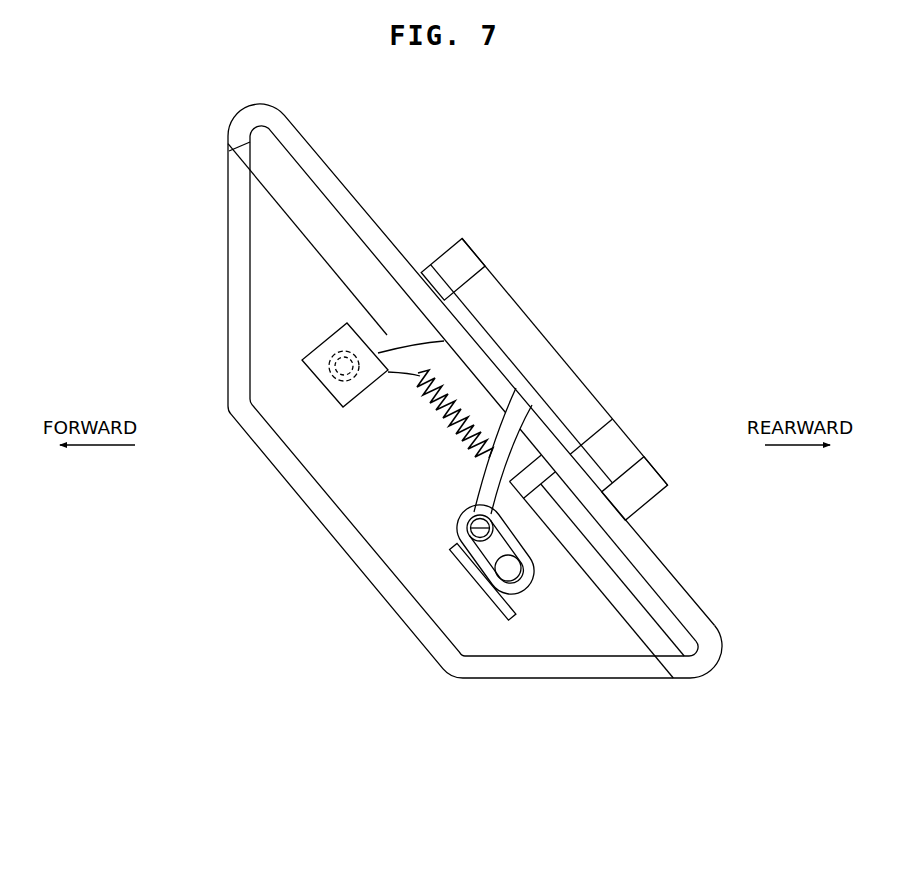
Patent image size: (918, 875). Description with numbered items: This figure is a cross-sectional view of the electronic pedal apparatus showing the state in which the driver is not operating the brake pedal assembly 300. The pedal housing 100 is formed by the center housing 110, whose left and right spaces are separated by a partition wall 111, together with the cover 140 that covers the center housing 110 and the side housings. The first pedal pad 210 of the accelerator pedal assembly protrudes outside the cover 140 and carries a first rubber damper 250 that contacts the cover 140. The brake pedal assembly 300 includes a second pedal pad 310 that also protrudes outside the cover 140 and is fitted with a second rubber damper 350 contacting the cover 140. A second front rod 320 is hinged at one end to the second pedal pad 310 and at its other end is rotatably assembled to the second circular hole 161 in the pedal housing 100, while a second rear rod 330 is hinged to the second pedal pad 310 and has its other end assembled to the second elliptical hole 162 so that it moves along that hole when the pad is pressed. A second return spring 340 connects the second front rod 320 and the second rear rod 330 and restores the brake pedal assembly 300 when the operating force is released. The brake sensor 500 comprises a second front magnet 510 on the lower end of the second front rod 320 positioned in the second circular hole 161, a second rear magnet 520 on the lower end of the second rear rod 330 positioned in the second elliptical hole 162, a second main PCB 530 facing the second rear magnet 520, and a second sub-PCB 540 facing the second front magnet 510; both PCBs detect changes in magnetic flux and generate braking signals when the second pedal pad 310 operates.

The pedal housing 100 is at (460, 391).
The center housing 110 is at (242, 381).
The partition wall 111 is at (290, 248).
The cover 140 is at (330, 180).
The second circular hole 161 is at (331, 358).
The second elliptical hole 162 is at (522, 578).
The first pedal pad 210 is at (453, 257).
The first rubber damper 250 is at (603, 483).
The brake pedal assembly 300 is at (473, 428).
The second pedal pad 310 is at (540, 367).
The second front rod 320 is at (442, 356).
The second rear rod 330 is at (513, 437).
The second return spring 340 is at (470, 450).
The second rubber damper 350 is at (457, 310).
The brake sensor 500 is at (330, 525).
The second front magnet 510 is at (342, 378).
The second rear magnet 520 is at (453, 550).
The second main PCB 530 is at (497, 603).
The second sub-PCB 540 is at (343, 407).